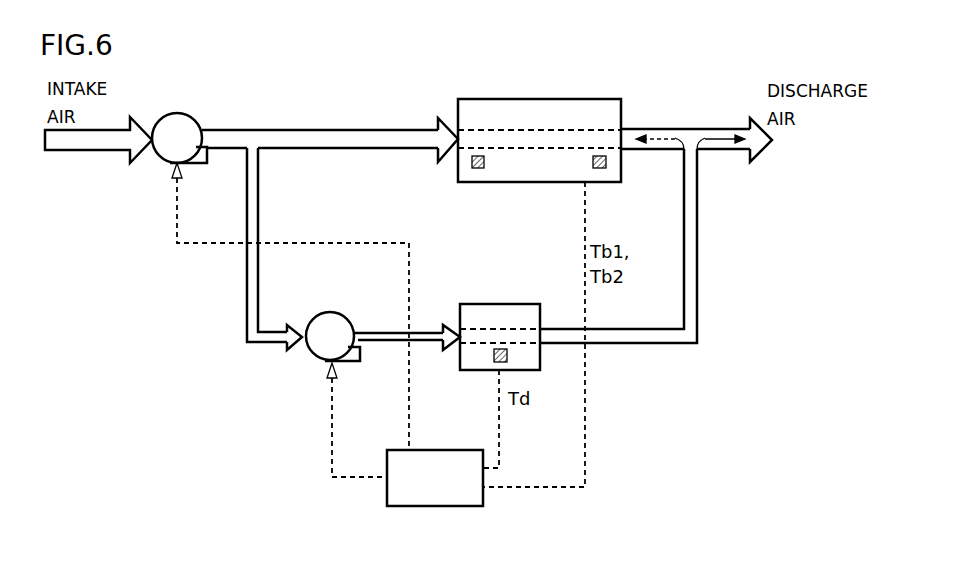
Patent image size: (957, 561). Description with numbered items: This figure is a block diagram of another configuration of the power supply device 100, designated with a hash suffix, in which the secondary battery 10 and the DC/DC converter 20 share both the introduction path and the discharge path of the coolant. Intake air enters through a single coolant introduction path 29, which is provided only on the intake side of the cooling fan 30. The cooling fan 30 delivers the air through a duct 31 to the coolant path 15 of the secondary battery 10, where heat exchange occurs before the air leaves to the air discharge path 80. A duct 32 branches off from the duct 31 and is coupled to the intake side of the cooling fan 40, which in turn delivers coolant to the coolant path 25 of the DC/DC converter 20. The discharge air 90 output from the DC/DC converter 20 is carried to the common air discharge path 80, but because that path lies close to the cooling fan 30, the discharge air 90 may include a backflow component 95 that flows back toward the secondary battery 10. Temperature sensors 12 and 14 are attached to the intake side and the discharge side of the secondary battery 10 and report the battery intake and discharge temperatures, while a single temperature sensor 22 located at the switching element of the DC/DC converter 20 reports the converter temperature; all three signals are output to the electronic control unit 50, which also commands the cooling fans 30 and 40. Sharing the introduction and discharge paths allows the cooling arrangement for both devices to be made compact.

The secondary battery 10 is at (527, 108).
The temperature sensor 12 is at (477, 168).
The temperature sensor 14 is at (600, 168).
The coolant path 15 is at (582, 135).
The DC/DC converter 20 is at (500, 304).
The temperature sensor 22 is at (490, 362).
The coolant path 25 is at (518, 329).
The coolant introduction path 29 is at (73, 150).
The cooling fan 30 is at (185, 113).
The duct 31 is at (312, 130).
The duct 32 is at (258, 203).
The cooling fan 40 is at (318, 363).
The electronic control unit 50 is at (443, 506).
The air discharge path 80 is at (697, 132).
The discharge air 90 is at (697, 283).
The backflow component 95 is at (679, 130).
The power supply device 100 is at (778, 501).